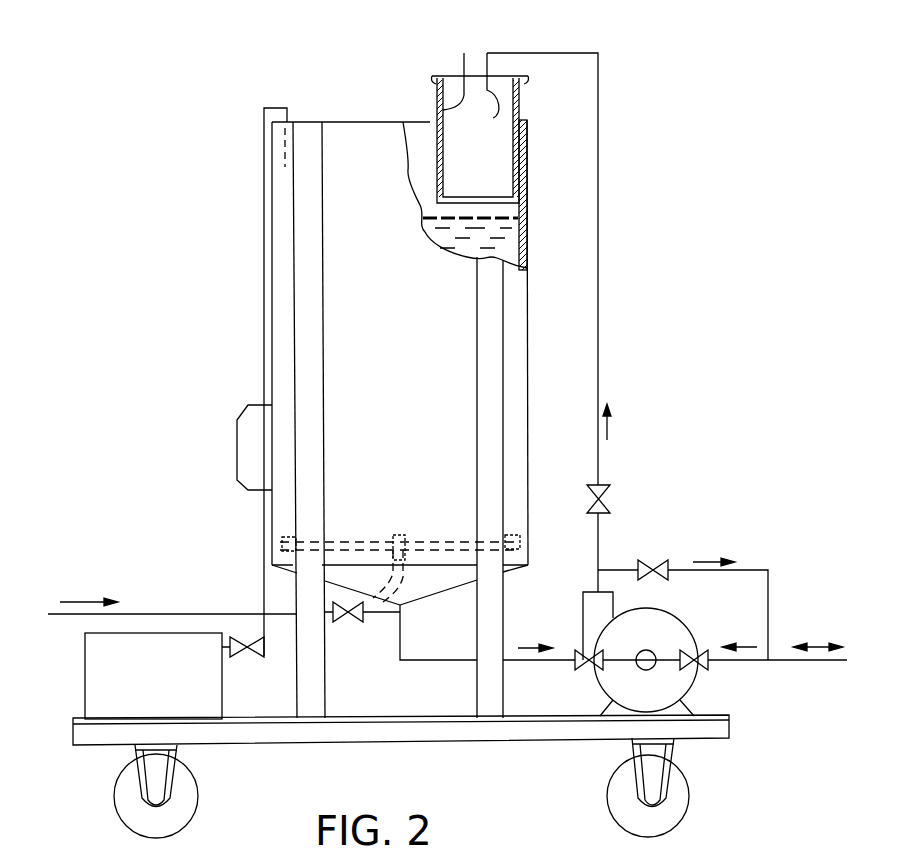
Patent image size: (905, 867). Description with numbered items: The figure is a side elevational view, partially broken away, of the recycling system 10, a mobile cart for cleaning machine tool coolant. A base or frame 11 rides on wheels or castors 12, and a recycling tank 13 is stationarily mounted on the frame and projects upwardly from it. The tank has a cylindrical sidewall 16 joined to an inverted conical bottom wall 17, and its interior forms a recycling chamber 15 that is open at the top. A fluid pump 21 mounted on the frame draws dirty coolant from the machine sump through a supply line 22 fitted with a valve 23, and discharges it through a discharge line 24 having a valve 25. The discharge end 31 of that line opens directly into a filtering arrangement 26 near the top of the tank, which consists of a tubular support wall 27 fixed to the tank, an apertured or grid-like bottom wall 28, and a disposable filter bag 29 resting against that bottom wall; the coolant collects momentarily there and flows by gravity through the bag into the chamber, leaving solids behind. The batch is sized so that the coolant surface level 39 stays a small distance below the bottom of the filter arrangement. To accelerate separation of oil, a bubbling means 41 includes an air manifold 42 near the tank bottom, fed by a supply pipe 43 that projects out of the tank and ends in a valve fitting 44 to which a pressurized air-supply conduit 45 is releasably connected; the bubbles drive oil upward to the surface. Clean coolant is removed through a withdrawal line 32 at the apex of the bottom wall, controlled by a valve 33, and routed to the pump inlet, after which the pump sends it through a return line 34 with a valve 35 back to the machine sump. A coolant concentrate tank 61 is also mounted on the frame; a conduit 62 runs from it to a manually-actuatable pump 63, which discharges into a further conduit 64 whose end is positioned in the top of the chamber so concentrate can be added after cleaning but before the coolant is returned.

The recycling system 10 is at (172, 286).
The base or frame 11 is at (493, 733).
The wheels or castors 12 is at (675, 806).
The recycling tank 13 is at (432, 323).
The recycling chamber 15 is at (420, 135).
The cylindrical sidewall 16 is at (528, 364).
The bottom wall 17 is at (455, 586).
The fluid pump 21 is at (674, 628).
The supply line 22 is at (753, 668).
The valve 23 is at (706, 664).
The discharge line 24 is at (600, 240).
The valve 25 is at (606, 500).
The filtering arrangement 26 is at (452, 72).
The tubular support wall 27 is at (524, 93).
The bottom wall 28 is at (517, 210).
The filter bag 29 is at (459, 63).
The discharge end 31 is at (481, 96).
The withdrawal line 32 is at (452, 662).
The valve 33 is at (586, 668).
The return line 34 is at (757, 570).
The valve 35 is at (660, 562).
The surface level 39 is at (423, 215).
The bubbling means 41 is at (350, 536).
The air manifold 42 is at (427, 542).
The supply pipe 43 is at (385, 612).
The valve fitting 44 is at (358, 620).
The pressurized air-supply conduit 45 is at (187, 613).
The coolant concentrate tank 61 is at (103, 683).
The conduit 62 is at (265, 530).
The manually-actuatable pump 63 is at (247, 455).
The further conduit 64 is at (264, 343).